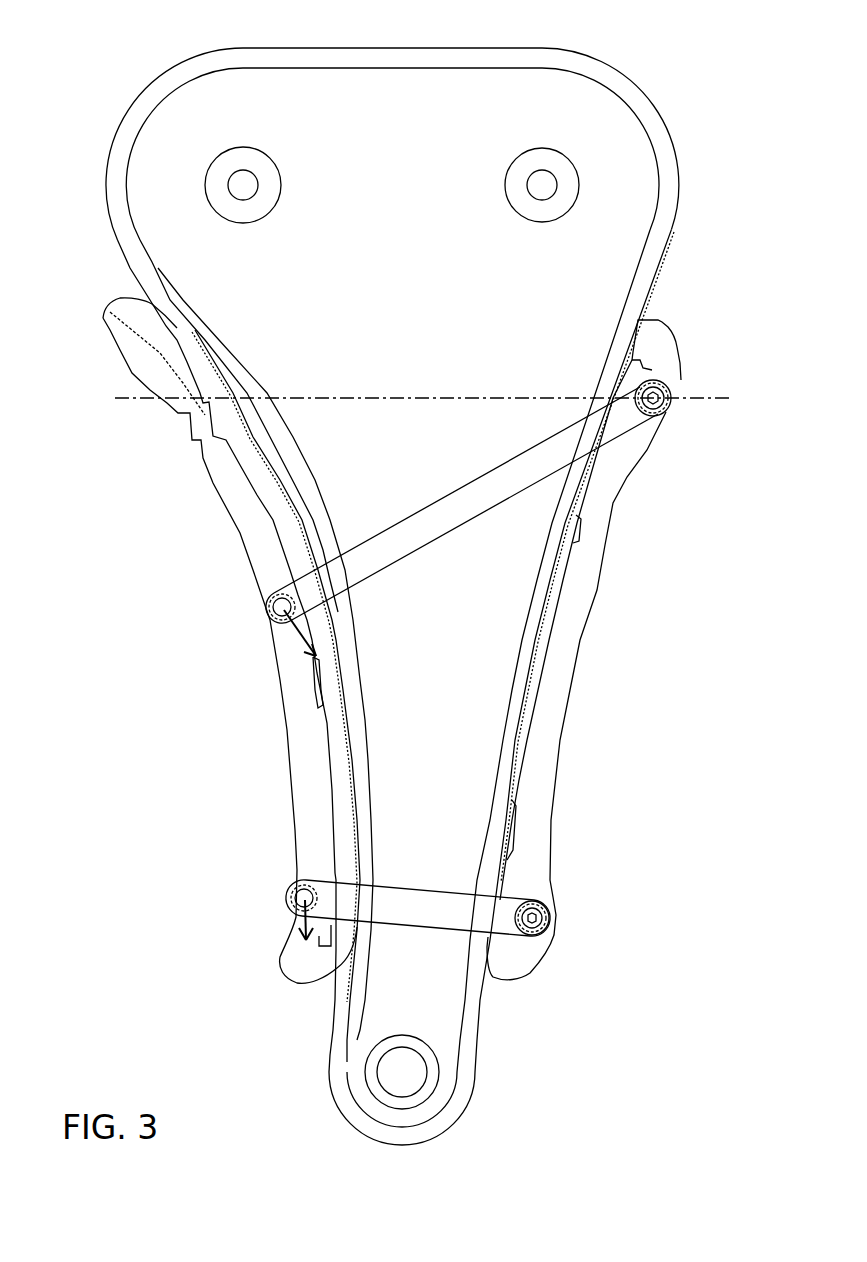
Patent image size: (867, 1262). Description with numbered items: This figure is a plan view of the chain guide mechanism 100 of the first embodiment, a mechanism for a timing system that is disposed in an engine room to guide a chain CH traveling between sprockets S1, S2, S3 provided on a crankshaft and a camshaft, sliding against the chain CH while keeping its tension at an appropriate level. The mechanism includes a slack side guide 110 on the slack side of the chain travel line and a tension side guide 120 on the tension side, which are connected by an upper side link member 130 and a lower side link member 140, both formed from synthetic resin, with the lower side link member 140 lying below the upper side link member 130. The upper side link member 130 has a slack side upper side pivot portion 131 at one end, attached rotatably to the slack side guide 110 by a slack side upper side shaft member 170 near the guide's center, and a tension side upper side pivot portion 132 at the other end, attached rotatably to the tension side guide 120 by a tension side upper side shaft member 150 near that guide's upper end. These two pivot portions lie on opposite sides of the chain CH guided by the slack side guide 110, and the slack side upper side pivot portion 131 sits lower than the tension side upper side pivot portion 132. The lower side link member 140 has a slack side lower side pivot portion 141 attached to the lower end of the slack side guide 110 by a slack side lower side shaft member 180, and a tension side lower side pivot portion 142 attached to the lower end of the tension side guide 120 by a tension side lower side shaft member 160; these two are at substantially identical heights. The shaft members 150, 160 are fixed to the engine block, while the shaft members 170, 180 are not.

The chain guide mechanism 100 is at (113, 74).
The chain CH is at (660, 142).
The sprocket S1 is at (425, 1080).
The sprocket S2 is at (248, 180).
The sprocket S3 is at (548, 178).
The slack side guide 110 is at (297, 707).
The tension side guide 120 is at (565, 644).
The upper side link member 130 is at (585, 438).
The slack side upper side pivot portion 131 is at (268, 612).
The tension side upper side pivot portion 132 is at (654, 422).
The lower side link member 140 is at (476, 918).
The slack side lower side pivot portion 141 is at (292, 905).
The tension side lower side pivot portion 142 is at (548, 905).
The tension side upper side shaft member 150 is at (655, 390).
The tension side lower side shaft member 160 is at (542, 921).
The slack side upper side shaft member 170 is at (278, 604).
The slack side lower side shaft member 180 is at (297, 890).